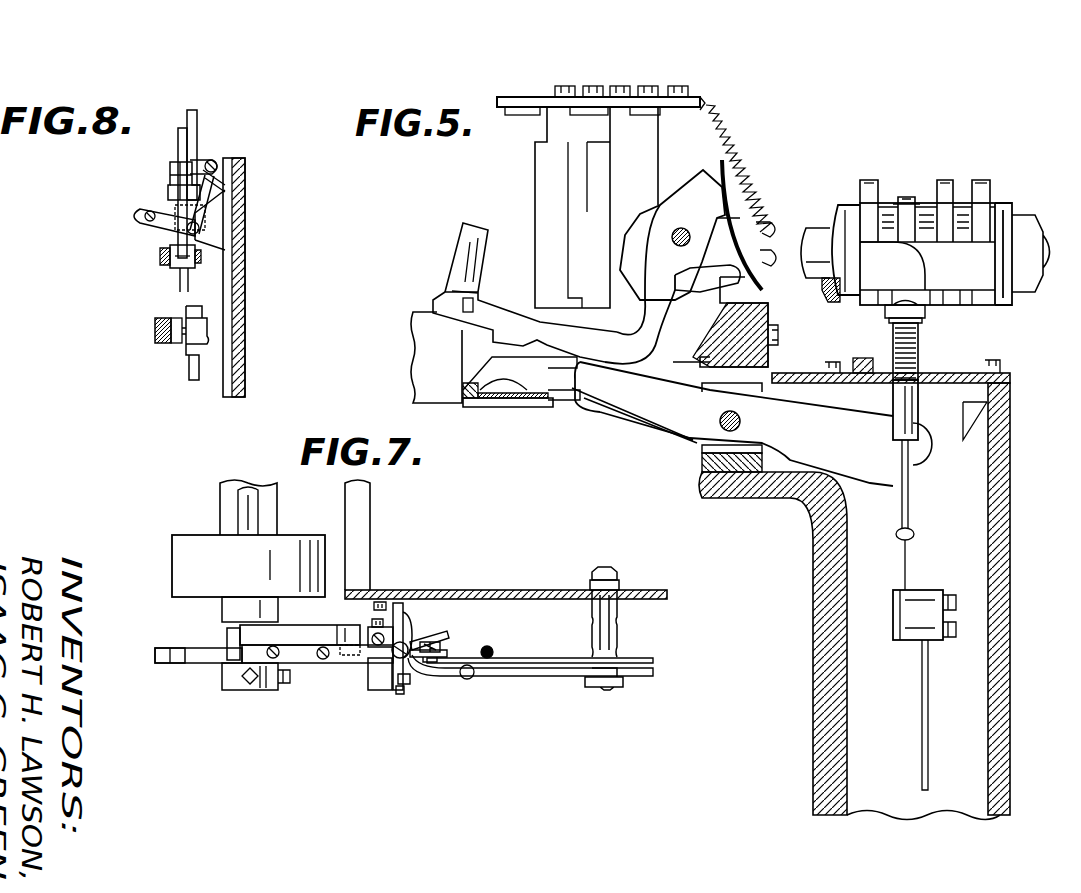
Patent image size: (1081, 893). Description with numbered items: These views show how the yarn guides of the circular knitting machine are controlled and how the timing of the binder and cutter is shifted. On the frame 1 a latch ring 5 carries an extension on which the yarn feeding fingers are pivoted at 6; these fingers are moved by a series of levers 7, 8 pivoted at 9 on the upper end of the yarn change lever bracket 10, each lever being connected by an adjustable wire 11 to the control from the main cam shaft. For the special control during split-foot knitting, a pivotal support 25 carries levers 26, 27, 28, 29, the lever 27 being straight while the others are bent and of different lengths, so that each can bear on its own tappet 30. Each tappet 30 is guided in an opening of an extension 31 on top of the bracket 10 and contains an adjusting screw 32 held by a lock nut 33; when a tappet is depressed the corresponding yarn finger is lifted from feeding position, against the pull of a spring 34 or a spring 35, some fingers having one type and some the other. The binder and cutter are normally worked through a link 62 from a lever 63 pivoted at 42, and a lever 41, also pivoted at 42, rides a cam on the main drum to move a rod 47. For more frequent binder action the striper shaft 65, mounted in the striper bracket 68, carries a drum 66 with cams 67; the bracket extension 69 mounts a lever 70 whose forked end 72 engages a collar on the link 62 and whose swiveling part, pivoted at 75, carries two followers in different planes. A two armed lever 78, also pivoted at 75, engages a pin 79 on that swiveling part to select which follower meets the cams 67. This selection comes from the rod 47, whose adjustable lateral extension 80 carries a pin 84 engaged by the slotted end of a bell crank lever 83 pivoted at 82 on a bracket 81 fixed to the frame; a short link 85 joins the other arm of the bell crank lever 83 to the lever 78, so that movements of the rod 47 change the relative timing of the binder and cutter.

In FIG. 8, the frame 1 is at (232, 318).
In FIG. 7, the frame 1 is at (358, 515).
In FIG. 5, the latch ring 5 is at (440, 396).
In FIG. 5, the pivot of yarn guides 6 is at (681, 229).
In FIG. 5, the lever 7 is at (648, 406).
In FIG. 5, the lever 8 is at (590, 403).
In FIG. 5, the pivot of levers 9 is at (719, 420).
In FIG. 5, the yarn change lever bracket 10 is at (822, 623).
In FIG. 5, the adjustable wire 11 is at (924, 731).
In FIG. 5, the pivotal support 25 is at (845, 212).
In FIG. 5, the lever 26 is at (868, 180).
In FIG. 5, the lever 27 is at (905, 197).
In FIG. 5, the lever 28 is at (942, 180).
In FIG. 5, the lever 29 is at (982, 182).
In FIG. 5, the tappet 30 is at (906, 408).
In FIG. 5, the extension 31 is at (919, 340).
In FIG. 5, the adjusting screw 32 is at (925, 312).
In FIG. 5, the lock nut 33 is at (887, 310).
In FIG. 5, the spring 34 is at (748, 210).
In FIG. 5, the spring 35 is at (763, 268).
In FIG. 8, the lever 41 is at (160, 337).
In FIG. 7, the lever 41 is at (525, 677).
In FIG. 7, the pivot 42 is at (600, 688).
In FIG. 8, the rod 47 is at (198, 123).
In FIG. 7, the rod 47 is at (384, 640).
In FIG. 8, the link 62 is at (180, 140).
In FIG. 7, the link 62 is at (448, 654).
In FIG. 8, the lever 63 is at (168, 270).
In FIG. 7, the lever 63 is at (515, 659).
In FIG. 7, the striper shaft 65 is at (258, 513).
In FIG. 7, the drum 66 is at (212, 663).
In FIG. 7, the cam 67 is at (168, 663).
In FIG. 7, the striper bracket 68 is at (232, 632).
In FIG. 7, the extension of striper bracket 69 is at (318, 632).
In FIG. 7, the lever 70 is at (441, 645).
In FIG. 7, the forked end 72 is at (440, 636).
In FIG. 7, the pivot 75 is at (322, 660).
In FIG. 7, the two armed lever 78 is at (360, 663).
In FIG. 7, the pin 79 is at (277, 649).
In FIG. 8, the lateral extension 80 is at (172, 207).
In FIG. 7, the lateral extension 80 is at (380, 690).
In FIG. 8, the bracket 81 is at (228, 226).
In FIG. 7, the bracket 81 is at (384, 602).
In FIG. 8, the pivot 82 is at (170, 250).
In FIG. 8, the bell crank lever 83 is at (186, 231).
In FIG. 7, the bell crank lever 83 is at (404, 691).
In FIG. 8, the pin 84 is at (136, 215).
In FIG. 7, the pin 84 is at (410, 680).
In FIG. 8, the short link 85 is at (206, 166).
In FIG. 7, the short link 85 is at (404, 617).